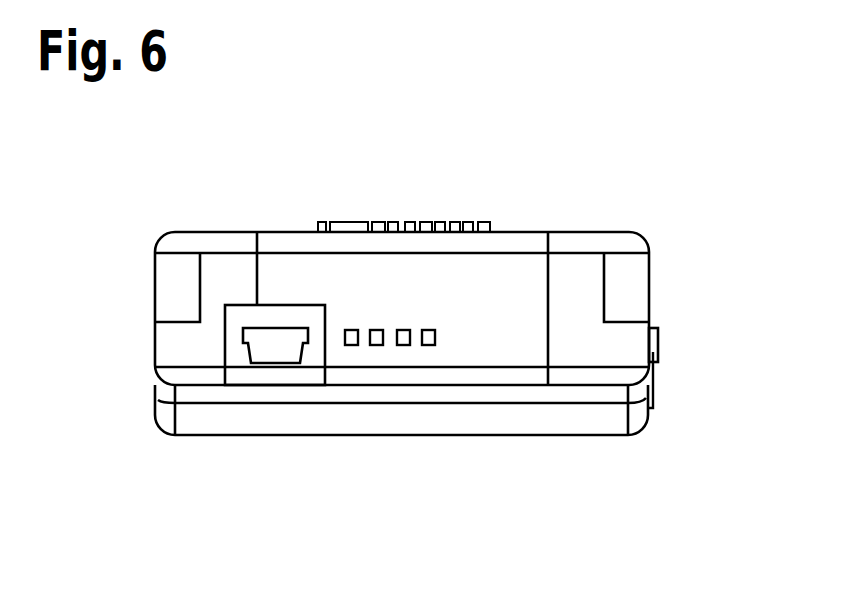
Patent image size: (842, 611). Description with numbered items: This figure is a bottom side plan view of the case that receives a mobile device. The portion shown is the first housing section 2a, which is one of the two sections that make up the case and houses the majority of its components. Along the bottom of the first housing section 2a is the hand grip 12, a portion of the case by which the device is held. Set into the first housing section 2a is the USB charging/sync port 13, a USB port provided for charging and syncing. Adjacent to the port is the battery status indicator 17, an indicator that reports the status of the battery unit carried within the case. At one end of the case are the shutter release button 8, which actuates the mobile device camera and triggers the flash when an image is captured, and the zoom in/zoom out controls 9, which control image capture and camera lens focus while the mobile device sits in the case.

The first housing section 2a is at (170, 350).
The shutter release button 8 is at (658, 382).
The zoom in/zoom out controls 9 is at (663, 342).
The hand grip 12 is at (400, 418).
The USB charging/sync port 13 is at (283, 381).
The battery status indicator 17 is at (351, 330).